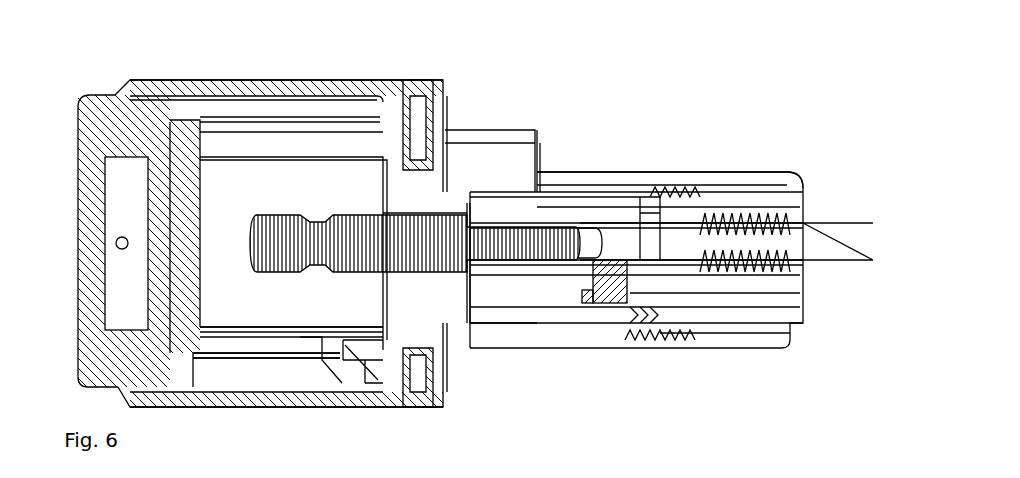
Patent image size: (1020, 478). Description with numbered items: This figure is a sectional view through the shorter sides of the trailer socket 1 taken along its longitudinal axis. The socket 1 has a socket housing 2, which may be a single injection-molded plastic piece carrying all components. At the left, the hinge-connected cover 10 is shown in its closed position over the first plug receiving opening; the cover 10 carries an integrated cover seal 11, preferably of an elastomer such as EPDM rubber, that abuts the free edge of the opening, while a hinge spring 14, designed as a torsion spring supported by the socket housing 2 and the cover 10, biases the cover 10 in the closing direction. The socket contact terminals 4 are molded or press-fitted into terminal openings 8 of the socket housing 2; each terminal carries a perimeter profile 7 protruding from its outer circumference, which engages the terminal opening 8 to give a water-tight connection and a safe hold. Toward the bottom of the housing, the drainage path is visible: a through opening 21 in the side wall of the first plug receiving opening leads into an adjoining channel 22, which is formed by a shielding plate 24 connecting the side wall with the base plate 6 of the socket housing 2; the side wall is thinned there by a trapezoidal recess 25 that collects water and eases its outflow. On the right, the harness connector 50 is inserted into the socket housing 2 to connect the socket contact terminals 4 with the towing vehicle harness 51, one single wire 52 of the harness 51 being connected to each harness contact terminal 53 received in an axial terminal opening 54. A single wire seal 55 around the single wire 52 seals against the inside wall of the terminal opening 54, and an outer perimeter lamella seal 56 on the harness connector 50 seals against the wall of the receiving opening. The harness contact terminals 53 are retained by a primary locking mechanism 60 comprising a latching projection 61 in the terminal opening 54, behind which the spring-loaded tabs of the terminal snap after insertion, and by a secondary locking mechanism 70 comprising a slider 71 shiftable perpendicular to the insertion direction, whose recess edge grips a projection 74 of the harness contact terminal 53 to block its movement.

The socket 1 is at (481, 386).
The socket housing 2 is at (397, 93).
The socket contact terminals 4 is at (406, 98).
The base plate 6 is at (385, 197).
The perimeter profile 7 is at (441, 203).
The terminal openings 8 is at (400, 258).
The cover 10 is at (95, 100).
The cover seal 11 is at (172, 356).
The hinge spring 14 is at (142, 212).
The through opening 21 is at (373, 348).
The channel 22 is at (372, 378).
The shielding plate 24 is at (338, 386).
The recess 25 is at (286, 306).
The harness connector 50 is at (745, 322).
The towing vehicle harness 51 is at (829, 176).
The single wire 52 is at (860, 224).
The harness contact terminals 53 is at (600, 225).
The terminal openings 54 is at (638, 242).
The single wire seal 55 is at (807, 268).
The outer perimeter lamella seal 56 is at (684, 172).
The primary locking mechanism 60 is at (500, 190).
The latching projection 61 is at (538, 170).
The secondary locking mechanism 70 is at (631, 313).
The slider 71 is at (612, 306).
The projection 74 is at (582, 303).